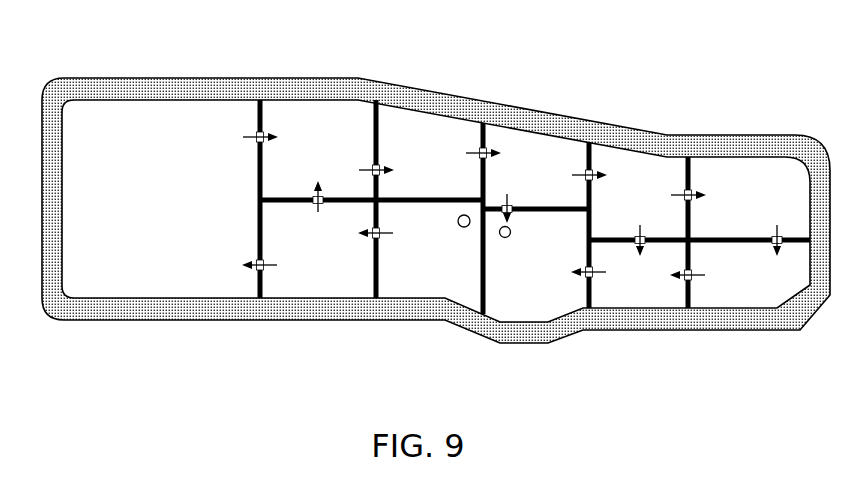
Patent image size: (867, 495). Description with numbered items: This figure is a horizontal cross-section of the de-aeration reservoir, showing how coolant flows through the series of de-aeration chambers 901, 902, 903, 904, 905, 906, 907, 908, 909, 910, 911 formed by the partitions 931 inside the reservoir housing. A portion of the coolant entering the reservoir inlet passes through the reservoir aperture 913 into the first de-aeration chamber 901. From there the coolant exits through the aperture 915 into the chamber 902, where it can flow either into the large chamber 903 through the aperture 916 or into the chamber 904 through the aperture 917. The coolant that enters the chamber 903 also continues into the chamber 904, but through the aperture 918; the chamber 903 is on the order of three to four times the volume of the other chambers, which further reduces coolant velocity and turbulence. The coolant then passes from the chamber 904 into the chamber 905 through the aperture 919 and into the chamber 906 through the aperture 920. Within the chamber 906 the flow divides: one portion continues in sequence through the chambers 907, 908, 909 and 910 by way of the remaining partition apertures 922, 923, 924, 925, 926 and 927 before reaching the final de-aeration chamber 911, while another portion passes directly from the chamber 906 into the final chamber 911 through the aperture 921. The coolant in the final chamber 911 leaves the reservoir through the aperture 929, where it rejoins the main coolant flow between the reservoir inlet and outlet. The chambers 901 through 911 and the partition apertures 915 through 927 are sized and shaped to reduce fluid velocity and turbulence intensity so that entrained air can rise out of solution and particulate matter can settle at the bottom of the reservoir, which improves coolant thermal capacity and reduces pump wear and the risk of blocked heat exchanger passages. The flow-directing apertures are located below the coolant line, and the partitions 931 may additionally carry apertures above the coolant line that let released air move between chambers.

The de-aeration chamber 901 is at (409, 269).
The de-aeration chamber 902 is at (298, 272).
The large de-aeration chamber 903 is at (131, 212).
The de-aeration chamber 904 is at (298, 157).
The de-aeration chamber 905 is at (409, 164).
The de-aeration chamber 906 is at (513, 182).
The de-aeration chamber 907 is at (616, 206).
The de-aeration chamber 908 is at (733, 209).
The de-aeration chamber 909 is at (733, 287).
The de-aeration chamber 910 is at (616, 291).
The final de-aeration chamber 911 is at (519, 286).
The reservoir aperture 913 is at (464, 228).
The partition aperture 915 is at (380, 236).
The partition aperture 916 is at (262, 266).
The partition aperture 917 is at (320, 201).
The partition aperture 918 is at (256, 135).
The partition aperture 919 is at (373, 170).
The partition aperture 920 is at (480, 153).
The partition aperture 921 is at (507, 194).
The partition aperture 922 is at (592, 175).
The partition aperture 923 is at (690, 195).
The partition aperture 924 is at (777, 240).
The partition aperture 925 is at (690, 275).
The partition aperture 926 is at (642, 242).
The partition aperture 927 is at (592, 274).
The reservoir aperture 929 is at (505, 238).
The partition 931 is at (379, 128).